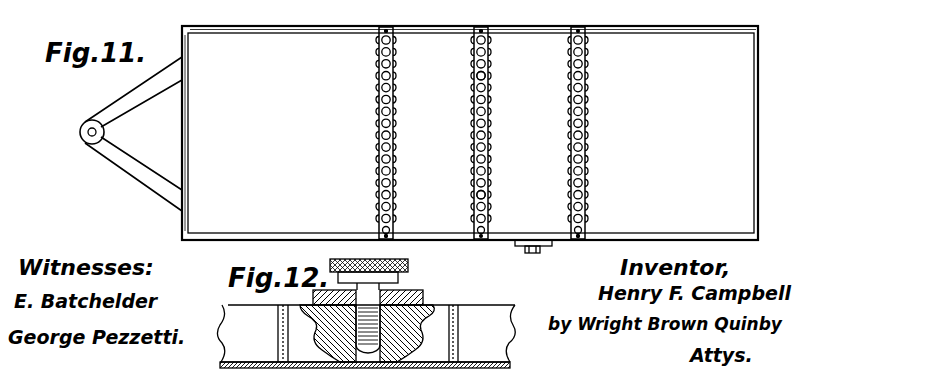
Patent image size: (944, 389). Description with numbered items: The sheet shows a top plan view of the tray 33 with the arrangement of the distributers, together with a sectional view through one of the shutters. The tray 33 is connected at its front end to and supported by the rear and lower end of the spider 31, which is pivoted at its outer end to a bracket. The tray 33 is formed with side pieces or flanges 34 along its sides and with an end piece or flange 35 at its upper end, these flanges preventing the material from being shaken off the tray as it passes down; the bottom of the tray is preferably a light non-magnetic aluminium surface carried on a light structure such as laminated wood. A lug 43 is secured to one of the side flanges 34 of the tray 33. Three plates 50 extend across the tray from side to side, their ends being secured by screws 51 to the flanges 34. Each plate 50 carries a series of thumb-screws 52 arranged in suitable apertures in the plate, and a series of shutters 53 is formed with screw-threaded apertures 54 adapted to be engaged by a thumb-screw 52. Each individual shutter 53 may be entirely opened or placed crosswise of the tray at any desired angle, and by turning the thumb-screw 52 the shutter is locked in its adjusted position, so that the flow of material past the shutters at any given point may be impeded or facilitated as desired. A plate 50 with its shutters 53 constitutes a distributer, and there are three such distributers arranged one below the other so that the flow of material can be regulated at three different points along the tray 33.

In FIG. 11, the spider 31 is at (138, 169).
In FIG. 11, the tray 33 is at (732, 97).
In FIG. 12, the tray 33 is at (490, 365).
In FIG. 11, the side pieces or flanges 34 is at (340, 27).
In FIG. 12, the side pieces or flanges 34 is at (495, 301).
In FIG. 11, the end piece or flange 35 is at (188, 112).
In FIG. 11, the lug 43 is at (534, 253).
In FIG. 11, the plates 50 is at (489, 38).
In FIG. 12, the plates 50 is at (425, 297).
In FIG. 11, the screws 51 is at (482, 31).
In FIG. 11, the thumb-screws 52 is at (485, 192).
In FIG. 12, the thumb-screws 52 is at (330, 264).
In FIG. 11, the shutters 53 is at (489, 76).
In FIG. 12, the shutters 53 is at (375, 333).
In FIG. 12, the screw-threaded apertures 54 is at (378, 356).